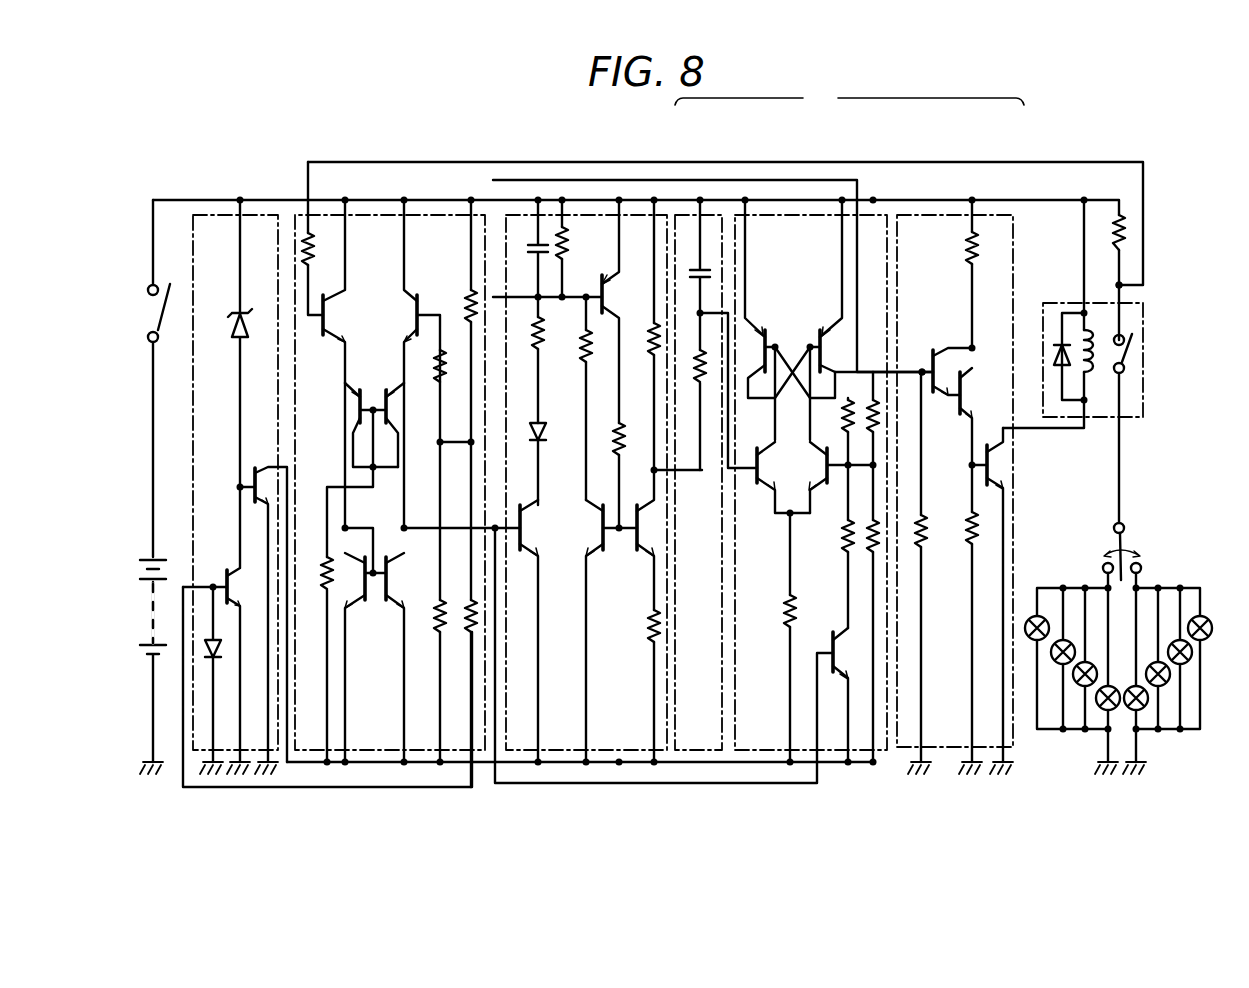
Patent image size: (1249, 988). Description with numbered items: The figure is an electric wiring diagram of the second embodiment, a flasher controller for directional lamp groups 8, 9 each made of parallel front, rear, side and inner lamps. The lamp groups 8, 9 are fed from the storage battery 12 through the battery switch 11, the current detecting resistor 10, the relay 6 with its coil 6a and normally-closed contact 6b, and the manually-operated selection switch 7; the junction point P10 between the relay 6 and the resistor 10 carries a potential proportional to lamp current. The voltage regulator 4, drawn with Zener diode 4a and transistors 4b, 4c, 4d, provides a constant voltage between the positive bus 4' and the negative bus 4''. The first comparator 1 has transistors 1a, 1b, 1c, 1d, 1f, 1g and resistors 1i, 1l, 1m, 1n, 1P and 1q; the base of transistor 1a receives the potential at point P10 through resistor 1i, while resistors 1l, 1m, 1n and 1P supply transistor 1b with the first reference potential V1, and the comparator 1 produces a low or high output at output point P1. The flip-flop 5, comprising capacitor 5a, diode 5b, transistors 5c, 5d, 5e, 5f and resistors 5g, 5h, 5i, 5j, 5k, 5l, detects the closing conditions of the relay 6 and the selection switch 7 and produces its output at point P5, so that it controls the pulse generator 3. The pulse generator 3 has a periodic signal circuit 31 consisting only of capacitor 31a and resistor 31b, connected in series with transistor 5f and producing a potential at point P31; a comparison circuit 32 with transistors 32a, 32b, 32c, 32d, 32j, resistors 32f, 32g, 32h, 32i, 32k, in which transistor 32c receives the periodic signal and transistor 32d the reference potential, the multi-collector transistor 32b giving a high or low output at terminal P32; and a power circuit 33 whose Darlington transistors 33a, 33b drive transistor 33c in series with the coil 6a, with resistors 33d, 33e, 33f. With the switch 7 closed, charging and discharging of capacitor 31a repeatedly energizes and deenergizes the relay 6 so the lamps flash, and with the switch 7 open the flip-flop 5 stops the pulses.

The first comparator 1 is at (410, 225).
The transistor 1a is at (332, 312).
The transistor 1b is at (410, 320).
The transistor 1c is at (354, 406).
The transistor 1d is at (390, 418).
The transistor 1f is at (364, 602).
The transistor 1g is at (396, 602).
The resistor 1i is at (324, 258).
The resistor 1l is at (446, 376).
The resistor 1m is at (438, 628).
The resistor 1n is at (464, 300).
The resistor 1P is at (468, 634).
The resistor 1q is at (322, 592).
The pulse generator 3 is at (849, 100).
The voltage regulator 4 is at (376, 454).
The positive bus 4' is at (235, 454).
The negative bus 4'' is at (340, 707).
The Zener diode 4a is at (230, 332).
The transistor 4b is at (264, 468).
The transistor 4c is at (224, 562).
The transistor 4d is at (222, 655).
The flip-flop 5 is at (585, 215).
The capacitor 5a is at (536, 260).
The diode 5b is at (534, 434).
The transistor 5c is at (532, 528).
The transistor 5d is at (612, 290).
The transistor 5e is at (594, 528).
The transistor 5f is at (646, 546).
The resistor 5g is at (532, 338).
The resistor 5h is at (586, 350).
The resistor 5i is at (632, 432).
The resistor 5j is at (618, 624).
The resistor 5k is at (646, 346).
The resistor 5l is at (570, 254).
The relay 6 is at (1143, 322).
The relay coil 6a is at (1094, 394).
The relay contact 6b is at (1130, 364).
The selection switch 7 is at (1140, 534).
The directional lamp group 8 is at (1050, 730).
The directional lamp group 9 is at (1186, 730).
The current detecting resistor 10 is at (1130, 232).
The battery switch 11 is at (149, 312).
The storage battery 12 is at (148, 600).
The periodic signal circuit 31 is at (678, 218).
The capacitor 31a is at (696, 266).
The resistor 31b is at (716, 370).
The comparison circuit 32 is at (780, 220).
The transistor 32a is at (748, 338).
The multi-collector transistor 32b is at (834, 306).
The transistor 32c is at (774, 488).
The transistor 32d is at (812, 486).
The resistor 32f is at (840, 424).
The resistor 32g is at (868, 438).
The resistor 32h is at (866, 554).
The resistor 32i is at (835, 642).
The transistor 32j is at (846, 680).
The resistor 32k is at (788, 610).
The power circuit 33 is at (906, 220).
The transistor 33a is at (950, 344).
The transistor 33b is at (972, 386).
The transistor 33c is at (996, 464).
The resistor 33d is at (932, 544).
The resistor 33e is at (965, 250).
The resistor 33f is at (957, 520).
The output point P1 is at (495, 524).
The output point P5 is at (683, 470).
The output point P31 is at (733, 466).
The output terminal P32 is at (898, 386).
The junction point P10 is at (1125, 290).
The first reference potential V1 is at (440, 444).